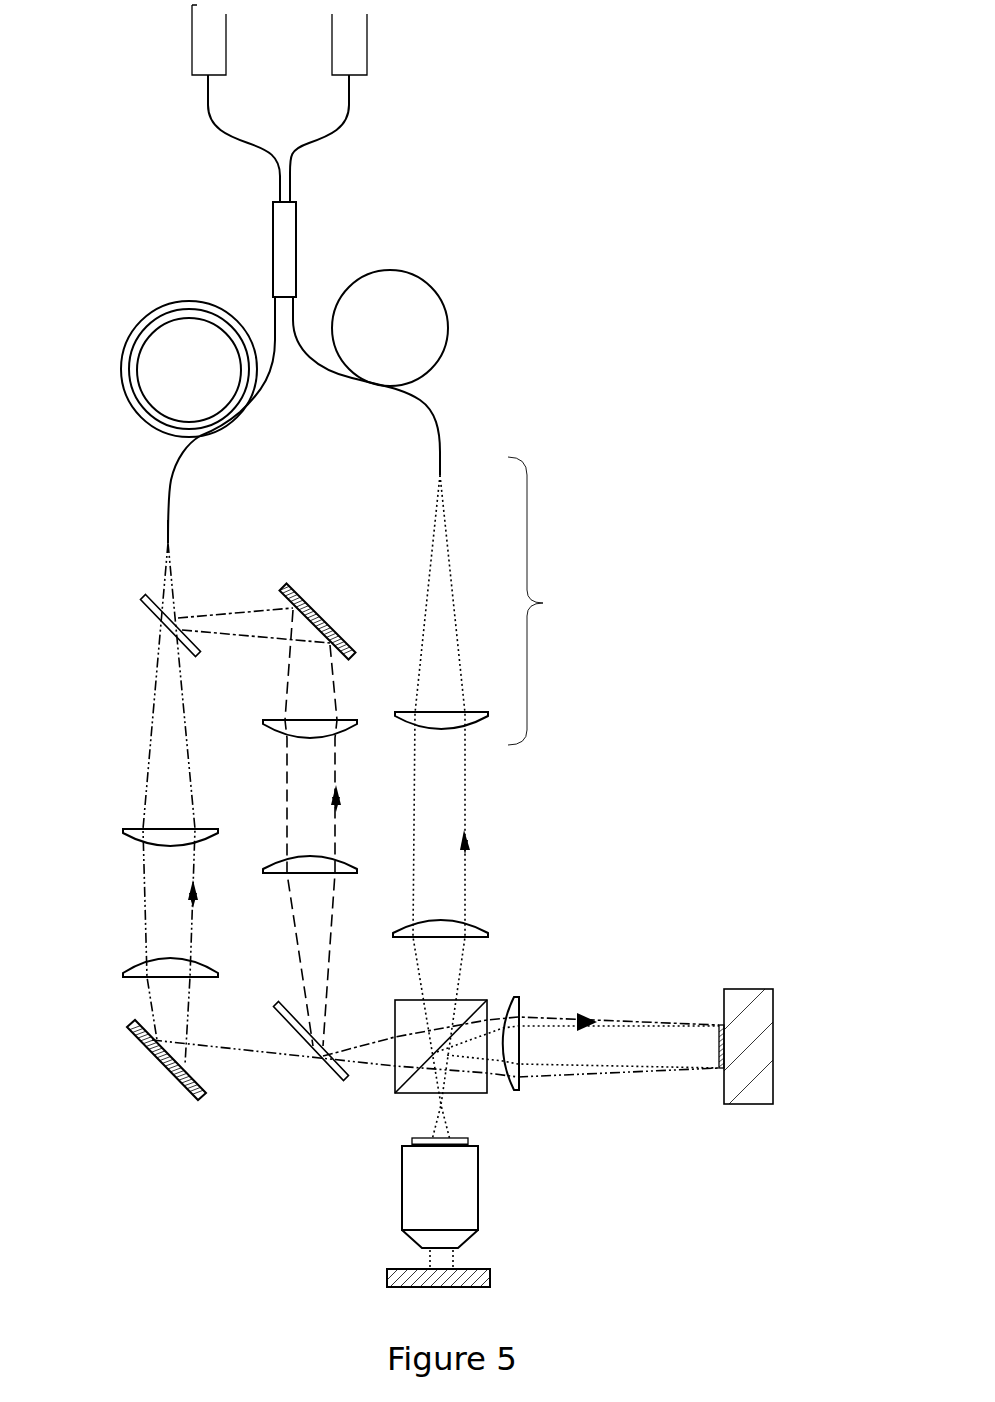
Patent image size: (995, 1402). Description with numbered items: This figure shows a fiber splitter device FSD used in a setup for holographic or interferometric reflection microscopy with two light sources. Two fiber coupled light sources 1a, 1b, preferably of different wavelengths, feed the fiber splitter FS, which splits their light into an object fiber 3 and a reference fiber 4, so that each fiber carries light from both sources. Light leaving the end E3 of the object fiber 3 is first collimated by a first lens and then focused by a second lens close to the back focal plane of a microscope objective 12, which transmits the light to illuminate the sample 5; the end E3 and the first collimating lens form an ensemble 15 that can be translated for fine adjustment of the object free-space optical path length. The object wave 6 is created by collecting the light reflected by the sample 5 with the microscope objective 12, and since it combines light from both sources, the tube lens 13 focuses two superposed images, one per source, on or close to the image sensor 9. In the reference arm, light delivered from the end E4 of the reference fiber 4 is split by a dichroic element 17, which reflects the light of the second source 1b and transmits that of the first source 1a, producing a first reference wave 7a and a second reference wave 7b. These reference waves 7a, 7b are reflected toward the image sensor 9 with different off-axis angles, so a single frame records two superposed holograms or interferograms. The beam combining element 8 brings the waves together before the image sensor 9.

The first light source 1a is at (202, 42).
The second light source 1b is at (350, 45).
The fiber splitter FS is at (273, 257).
The fiber splitter device FSD is at (503, 172).
The object fiber 3 is at (440, 292).
The reference fiber 4 is at (172, 477).
The end of the object fiber E3 is at (438, 475).
The end of the reference fiber E4 is at (168, 543).
The ensemble 15 is at (492, 798).
The first reference wave 7a is at (153, 790).
The second reference wave 7b is at (298, 813).
The dichroic element 17 is at (148, 613).
The object wave 6 is at (545, 1027).
The beam splitter cube 8 is at (402, 1095).
The tube lens 13 is at (517, 1087).
The image sensor 9 is at (720, 1026).
The microscope objective 12 is at (470, 1182).
The sample 5 is at (387, 1275).